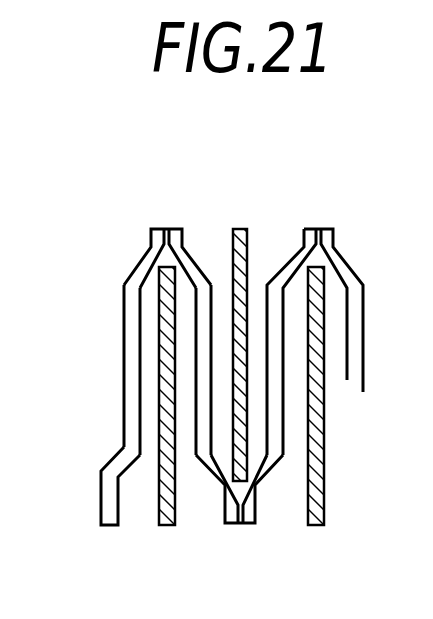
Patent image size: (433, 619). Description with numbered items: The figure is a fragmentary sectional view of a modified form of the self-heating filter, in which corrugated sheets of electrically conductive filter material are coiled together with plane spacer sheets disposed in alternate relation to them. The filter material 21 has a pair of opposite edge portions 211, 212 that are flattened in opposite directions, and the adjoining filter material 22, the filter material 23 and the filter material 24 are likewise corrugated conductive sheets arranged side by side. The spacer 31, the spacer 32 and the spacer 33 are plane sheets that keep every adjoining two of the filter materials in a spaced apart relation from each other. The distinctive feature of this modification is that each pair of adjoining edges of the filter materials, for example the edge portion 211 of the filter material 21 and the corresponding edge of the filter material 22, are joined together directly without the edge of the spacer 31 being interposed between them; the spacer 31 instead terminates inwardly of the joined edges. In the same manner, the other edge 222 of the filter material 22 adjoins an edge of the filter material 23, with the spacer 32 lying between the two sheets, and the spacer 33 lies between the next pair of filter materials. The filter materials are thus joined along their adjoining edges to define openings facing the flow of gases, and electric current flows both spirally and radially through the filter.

The filter material 21 is at (114, 340).
The edge portion of filter material 21 211 is at (171, 237).
The edge portion of filter material 21 212 is at (105, 508).
The filter material 22 is at (239, 379).
The edge of filter material 22 222 is at (223, 512).
The filter material 23 is at (287, 265).
The filter material 24 is at (340, 270).
The spacer 31 is at (158, 513).
The spacer 32 is at (236, 463).
The spacer 33 is at (320, 488).